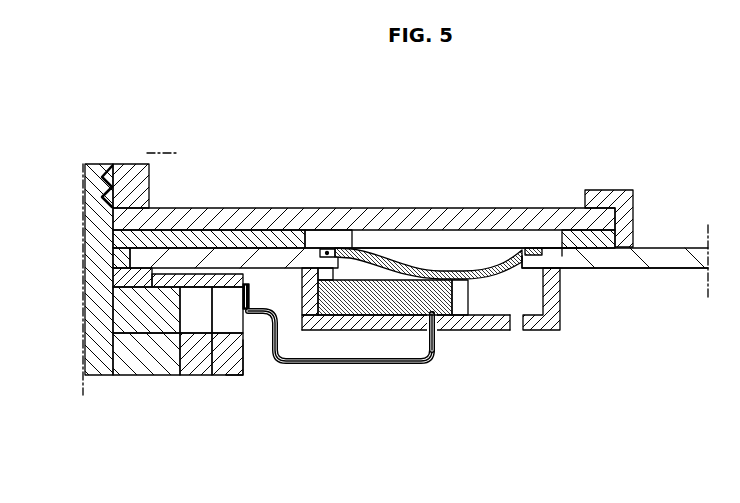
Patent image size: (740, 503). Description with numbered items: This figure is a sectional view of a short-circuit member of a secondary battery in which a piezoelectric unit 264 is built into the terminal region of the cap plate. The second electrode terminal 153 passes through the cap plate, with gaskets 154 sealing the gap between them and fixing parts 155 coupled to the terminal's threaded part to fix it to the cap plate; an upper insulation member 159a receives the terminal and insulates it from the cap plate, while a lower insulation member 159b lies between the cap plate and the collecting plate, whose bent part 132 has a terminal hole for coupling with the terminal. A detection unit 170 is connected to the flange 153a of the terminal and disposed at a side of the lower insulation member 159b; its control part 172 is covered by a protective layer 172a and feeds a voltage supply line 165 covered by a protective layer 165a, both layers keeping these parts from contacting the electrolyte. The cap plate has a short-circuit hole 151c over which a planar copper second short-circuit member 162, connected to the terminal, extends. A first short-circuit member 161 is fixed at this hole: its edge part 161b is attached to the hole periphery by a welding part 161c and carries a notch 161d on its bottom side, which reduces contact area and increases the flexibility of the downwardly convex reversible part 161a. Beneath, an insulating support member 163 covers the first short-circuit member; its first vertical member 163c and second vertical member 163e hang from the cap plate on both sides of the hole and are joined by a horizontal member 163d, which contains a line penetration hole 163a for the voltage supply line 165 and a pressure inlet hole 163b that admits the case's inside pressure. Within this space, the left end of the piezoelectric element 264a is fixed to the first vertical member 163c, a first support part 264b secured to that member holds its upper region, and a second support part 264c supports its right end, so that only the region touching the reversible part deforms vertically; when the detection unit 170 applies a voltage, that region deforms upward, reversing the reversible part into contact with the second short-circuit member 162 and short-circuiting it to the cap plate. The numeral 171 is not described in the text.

The bent part 132 is at (140, 368).
The short-circuit hole 151c is at (515, 268).
The second electrode terminal 153 is at (92, 237).
The flange 153a is at (147, 305).
The gaskets 154 is at (117, 274).
The fixing parts 155 is at (130, 176).
The upper insulation member 159a is at (613, 193).
The lower insulation member 159b is at (241, 358).
The first short-circuit member 161 is at (477, 182).
The reversible part 161a is at (485, 264).
The edge part 161b is at (528, 247).
The welding part 161c is at (565, 247).
The notch 161d is at (553, 247).
The second short-circuit member 162 is at (198, 218).
The support member 163 is at (470, 294).
The line penetration hole 163a is at (427, 369).
The pressure inlet hole 163b is at (513, 331).
The first vertical member 163c is at (304, 290).
The horizontal member 163d is at (370, 332).
The second vertical member 163e is at (550, 303).
The voltage supply line 165 is at (345, 380).
The protective layer 165a is at (428, 364).
The detection unit 170 is at (203, 385).
The first support 171 is at (188, 330).
The control part 172 is at (224, 330).
The protective layer 172a is at (248, 288).
The piezoelectric unit 264 is at (393, 200).
The piezoelectric element 264a is at (387, 282).
The first support part 264b is at (331, 249).
The second support part 264c is at (463, 270).